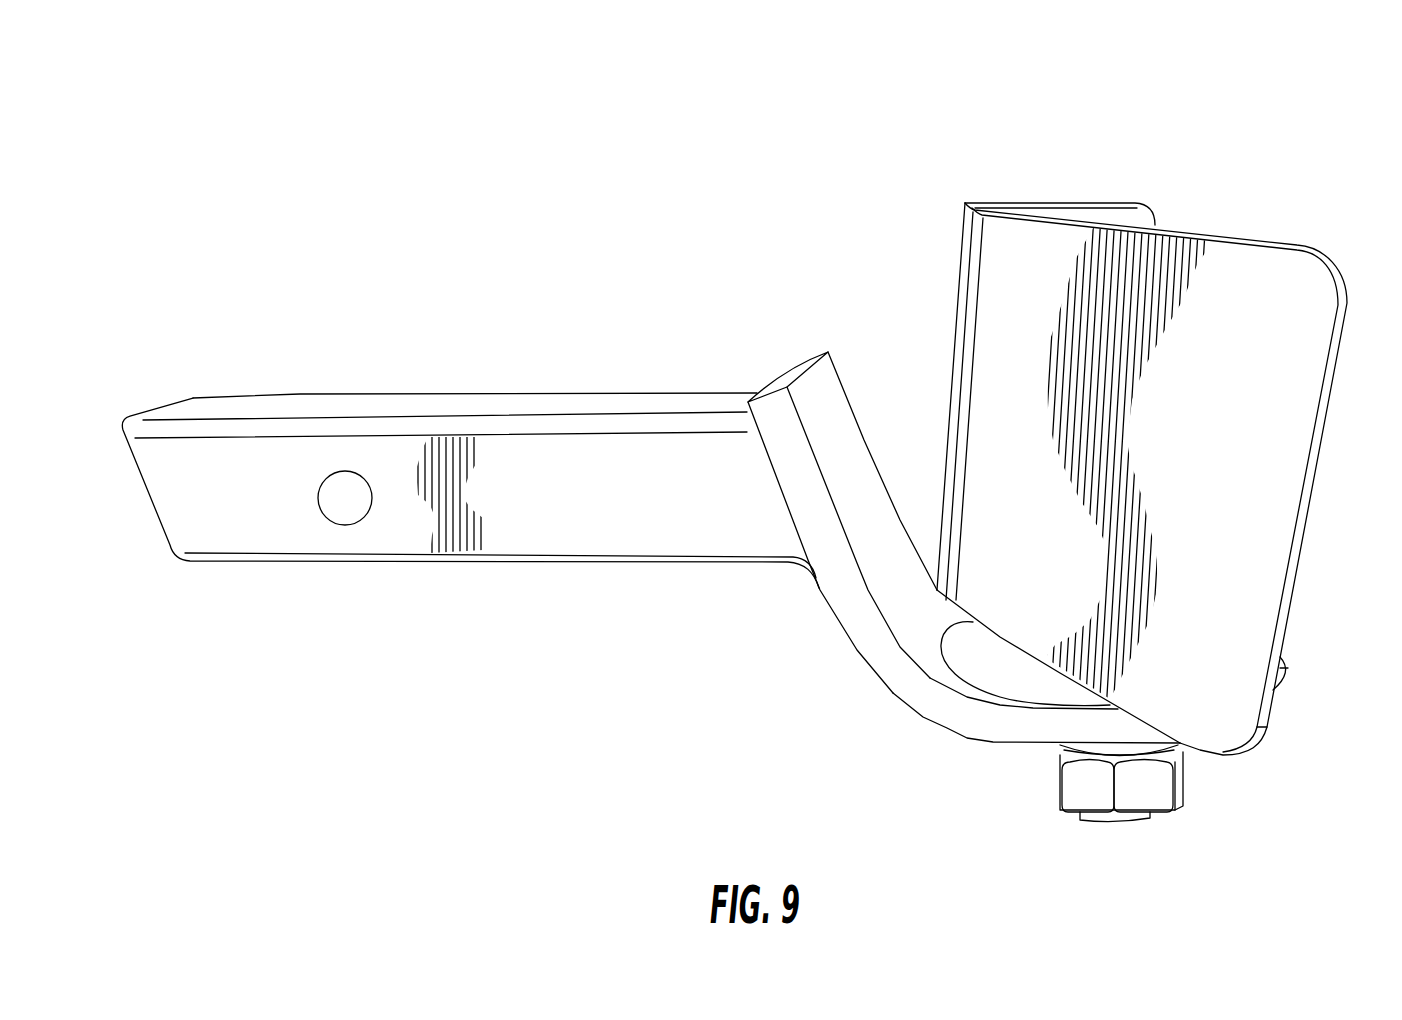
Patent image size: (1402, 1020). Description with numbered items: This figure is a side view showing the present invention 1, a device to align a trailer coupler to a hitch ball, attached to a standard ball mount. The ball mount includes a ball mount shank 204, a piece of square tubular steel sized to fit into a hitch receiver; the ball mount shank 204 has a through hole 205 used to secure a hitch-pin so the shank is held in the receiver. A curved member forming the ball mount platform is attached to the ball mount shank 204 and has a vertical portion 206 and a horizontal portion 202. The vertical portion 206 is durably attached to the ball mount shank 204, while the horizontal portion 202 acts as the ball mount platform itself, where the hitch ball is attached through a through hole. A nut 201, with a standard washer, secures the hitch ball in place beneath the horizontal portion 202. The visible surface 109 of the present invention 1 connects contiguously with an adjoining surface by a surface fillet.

The present invention 1 is at (1152, 101).
The surface 109 is at (1197, 340).
The nut 201 is at (1147, 805).
The horizontal portion 202 is at (1007, 741).
The ball mount shank 204 is at (534, 453).
The through hole 205 is at (347, 497).
The vertical portion 206 is at (851, 450).